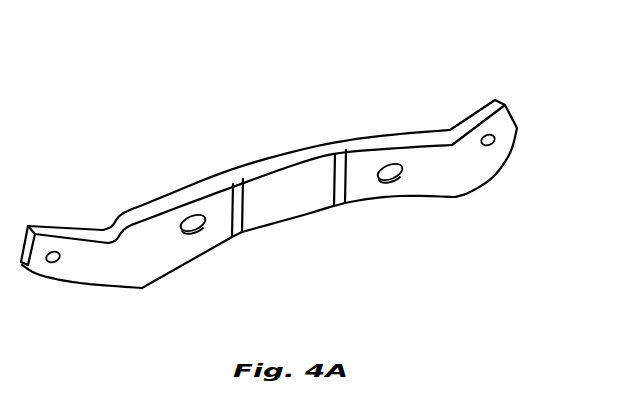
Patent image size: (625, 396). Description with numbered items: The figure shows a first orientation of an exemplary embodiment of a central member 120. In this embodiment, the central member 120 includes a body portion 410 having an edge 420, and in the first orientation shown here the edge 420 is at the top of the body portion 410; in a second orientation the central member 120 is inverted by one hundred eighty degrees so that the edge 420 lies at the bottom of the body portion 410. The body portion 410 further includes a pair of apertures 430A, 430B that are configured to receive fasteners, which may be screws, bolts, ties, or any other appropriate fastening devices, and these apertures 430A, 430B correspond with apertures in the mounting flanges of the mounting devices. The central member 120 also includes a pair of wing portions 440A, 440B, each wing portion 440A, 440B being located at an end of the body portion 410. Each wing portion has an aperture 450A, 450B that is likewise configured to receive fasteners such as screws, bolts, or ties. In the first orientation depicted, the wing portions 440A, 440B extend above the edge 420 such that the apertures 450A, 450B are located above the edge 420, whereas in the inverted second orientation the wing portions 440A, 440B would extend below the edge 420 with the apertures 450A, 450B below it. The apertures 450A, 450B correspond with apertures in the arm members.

The central member 120 is at (126, 88).
The body portion 410 is at (282, 200).
The edge 420 is at (278, 163).
The aperture 430A is at (198, 230).
The aperture 430B is at (393, 178).
The wing portion 440A is at (83, 250).
The wing portion 440B is at (468, 140).
The aperture 450A is at (57, 260).
The aperture 450B is at (492, 145).